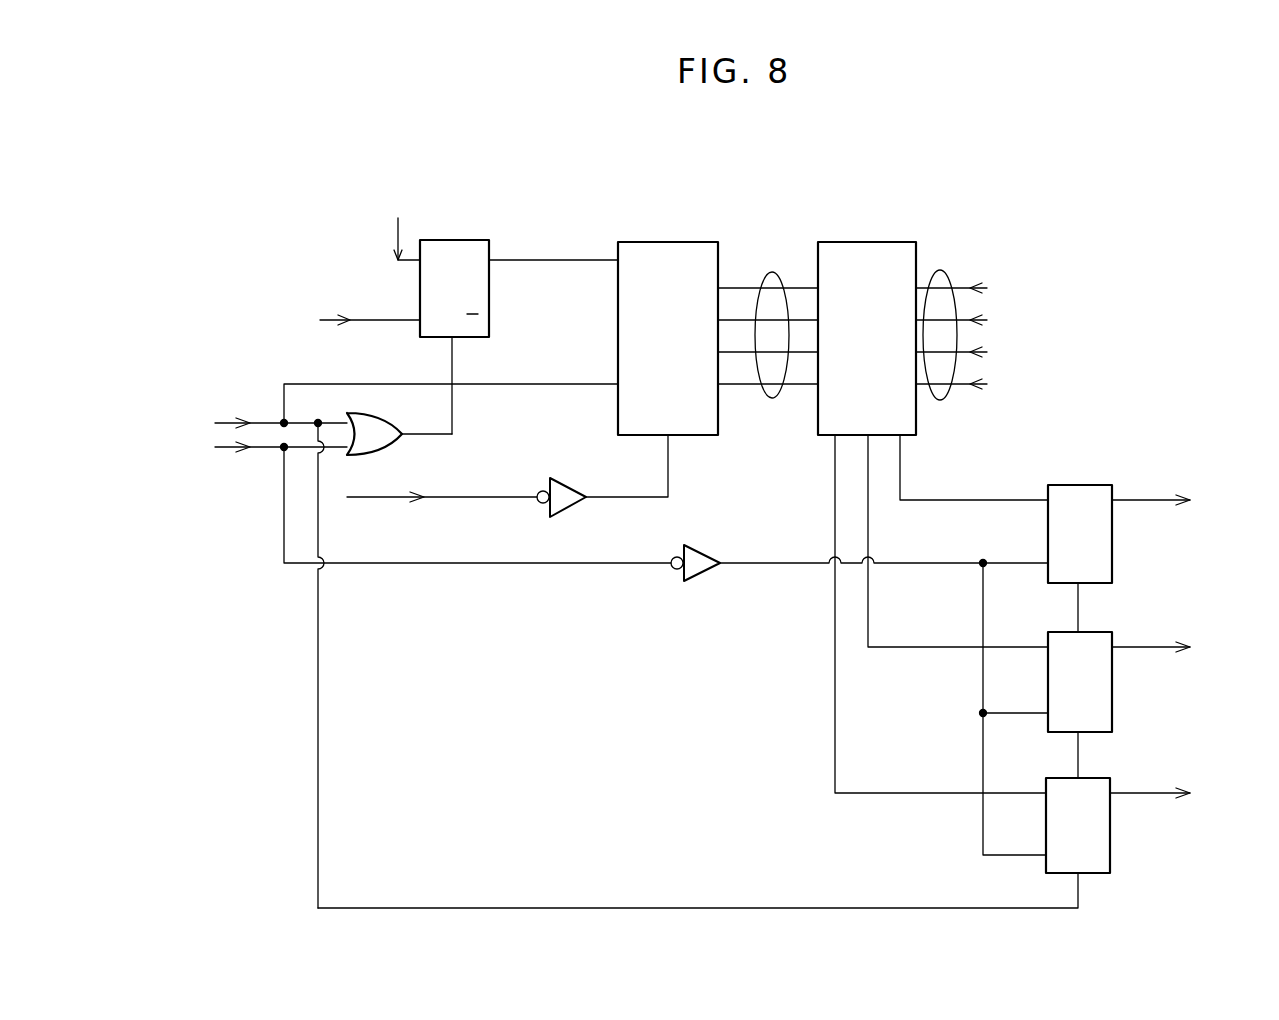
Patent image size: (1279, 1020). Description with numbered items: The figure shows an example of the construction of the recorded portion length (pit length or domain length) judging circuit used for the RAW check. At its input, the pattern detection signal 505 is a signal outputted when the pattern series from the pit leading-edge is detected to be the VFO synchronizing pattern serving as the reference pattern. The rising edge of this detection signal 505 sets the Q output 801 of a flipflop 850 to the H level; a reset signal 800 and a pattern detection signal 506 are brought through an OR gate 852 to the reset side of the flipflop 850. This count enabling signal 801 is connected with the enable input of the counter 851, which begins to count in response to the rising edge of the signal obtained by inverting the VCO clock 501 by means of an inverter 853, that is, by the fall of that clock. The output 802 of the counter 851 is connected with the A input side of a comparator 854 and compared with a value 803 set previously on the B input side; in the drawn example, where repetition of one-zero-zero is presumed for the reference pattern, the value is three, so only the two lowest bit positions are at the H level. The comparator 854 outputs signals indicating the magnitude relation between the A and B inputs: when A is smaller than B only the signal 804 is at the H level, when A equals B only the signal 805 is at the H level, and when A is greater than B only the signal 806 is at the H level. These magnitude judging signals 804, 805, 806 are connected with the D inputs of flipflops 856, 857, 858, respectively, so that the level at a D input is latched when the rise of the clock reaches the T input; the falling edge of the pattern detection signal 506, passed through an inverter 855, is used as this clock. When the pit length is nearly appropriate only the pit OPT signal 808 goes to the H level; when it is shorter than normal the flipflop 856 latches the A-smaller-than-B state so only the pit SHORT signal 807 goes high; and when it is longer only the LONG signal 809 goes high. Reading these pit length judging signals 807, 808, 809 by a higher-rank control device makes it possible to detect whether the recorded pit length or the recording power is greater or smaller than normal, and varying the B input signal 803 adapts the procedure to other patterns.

The flipflop 850 is at (455, 240).
The counter 851 is at (668, 242).
The comparator 854 is at (873, 242).
The count enabling signal 801 is at (532, 260).
The counter output 802 is at (772, 272).
The B input signal 803 is at (942, 270).
The pattern detection signal 505 is at (322, 320).
The reset signal 800 is at (228, 423).
The pattern detection signal 506 is at (228, 447).
The OR gate 852 is at (396, 450).
The inverter 853 is at (572, 510).
The inverter 855 is at (703, 580).
The VCOCLK 1 501 is at (395, 500).
The A B signal 804 is at (835, 488).
The A=B signal 805 is at (868, 548).
The A B signal 806 is at (900, 468).
The flipflop 858 is at (1080, 485).
The flipflop 857 is at (1092, 632).
The flipflop 856 is at (1090, 778).
The pit LONG signal 809 is at (1176, 490).
The pit OPT signal 808 is at (1176, 638).
The pit SHORT signal 807 is at (1176, 785).